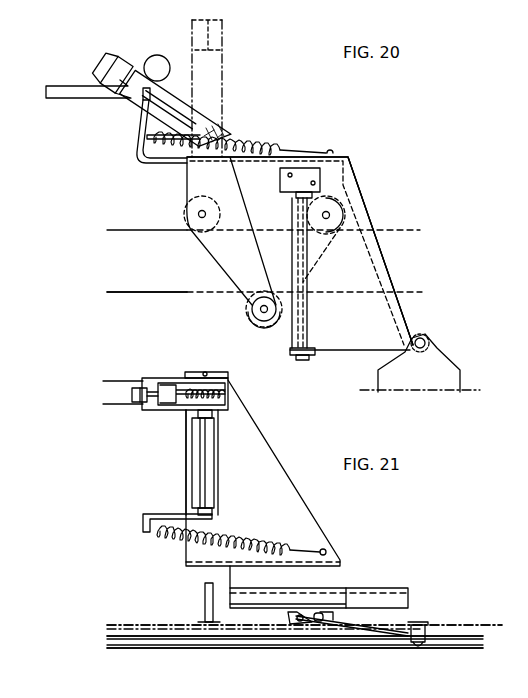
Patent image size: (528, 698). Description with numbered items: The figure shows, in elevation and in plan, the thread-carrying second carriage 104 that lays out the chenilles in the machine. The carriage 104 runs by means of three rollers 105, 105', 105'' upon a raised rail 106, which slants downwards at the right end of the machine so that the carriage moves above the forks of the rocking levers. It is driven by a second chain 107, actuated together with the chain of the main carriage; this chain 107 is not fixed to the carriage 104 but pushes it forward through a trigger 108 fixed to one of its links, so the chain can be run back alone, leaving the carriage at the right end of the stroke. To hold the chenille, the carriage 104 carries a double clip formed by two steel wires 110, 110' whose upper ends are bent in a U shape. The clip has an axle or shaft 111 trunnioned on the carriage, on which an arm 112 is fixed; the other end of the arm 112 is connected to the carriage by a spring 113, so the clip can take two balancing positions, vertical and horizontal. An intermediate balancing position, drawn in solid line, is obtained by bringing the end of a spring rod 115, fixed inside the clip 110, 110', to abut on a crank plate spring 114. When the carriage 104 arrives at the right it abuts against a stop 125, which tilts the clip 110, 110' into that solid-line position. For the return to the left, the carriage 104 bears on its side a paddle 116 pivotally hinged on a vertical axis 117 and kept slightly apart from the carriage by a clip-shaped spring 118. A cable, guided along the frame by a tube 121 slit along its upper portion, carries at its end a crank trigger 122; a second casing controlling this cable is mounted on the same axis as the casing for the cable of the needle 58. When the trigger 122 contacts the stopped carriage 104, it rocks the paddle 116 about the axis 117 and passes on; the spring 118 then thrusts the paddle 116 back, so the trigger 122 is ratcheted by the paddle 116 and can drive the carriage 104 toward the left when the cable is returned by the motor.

In FIG. 20, the needle 58 is at (63, 92).
In FIG. 20, the second carriage 104 is at (200, 184).
In FIG. 20, the roller 105 is at (142, 226).
In FIG. 20, the roller 105' is at (242, 313).
In FIG. 20, the roller 105'' is at (368, 209).
In FIG. 20, the raised rail 106 is at (156, 278).
In FIG. 21, the raised rail 106 is at (395, 588).
In FIG. 21, the second chain 107 is at (478, 628).
In FIG. 21, the trigger 108 is at (205, 591).
In FIG. 20, the steel wire 110 is at (162, 86).
In FIG. 21, the steel wire 110 is at (169, 385).
In FIG. 21, the steel wire 110' is at (109, 377).
In FIG. 20, the axle or shaft 111 is at (222, 128).
In FIG. 21, the axle or shaft 111 is at (212, 517).
In FIG. 20, the arm 112 is at (156, 143).
In FIG. 21, the arm 112 is at (166, 513).
In FIG. 20, the spring 113 is at (250, 146).
In FIG. 21, the spring 113 is at (263, 540).
In FIG. 20, the crank plate spring 114 is at (133, 144).
In FIG. 21, the crank plate spring 114 is at (135, 395).
In FIG. 20, the spring rod 115 is at (165, 100).
In FIG. 21, the spring rod 115 is at (178, 393).
In FIG. 20, the paddle 116 is at (365, 270).
In FIG. 21, the paddle 116 is at (370, 632).
In FIG. 20, the vertical axis 117 is at (300, 333).
In FIG. 21, the vertical axis 117 is at (295, 623).
In FIG. 21, the clip-shaped spring 118 is at (328, 624).
In FIG. 21, the tube 121 is at (444, 648).
In FIG. 21, the crank trigger 122 is at (420, 627).
In FIG. 20, the stop 125 is at (159, 60).